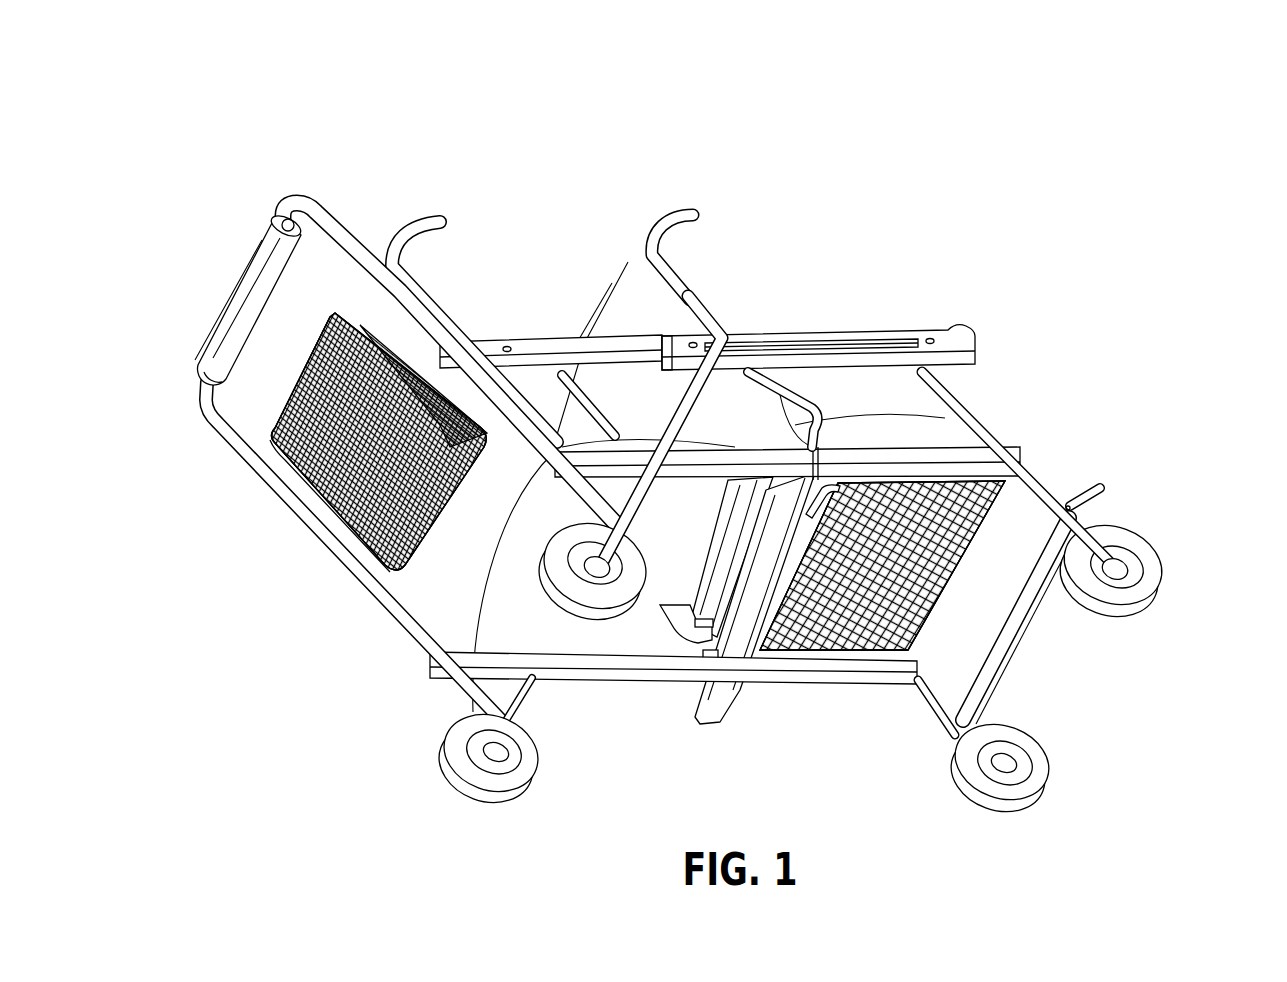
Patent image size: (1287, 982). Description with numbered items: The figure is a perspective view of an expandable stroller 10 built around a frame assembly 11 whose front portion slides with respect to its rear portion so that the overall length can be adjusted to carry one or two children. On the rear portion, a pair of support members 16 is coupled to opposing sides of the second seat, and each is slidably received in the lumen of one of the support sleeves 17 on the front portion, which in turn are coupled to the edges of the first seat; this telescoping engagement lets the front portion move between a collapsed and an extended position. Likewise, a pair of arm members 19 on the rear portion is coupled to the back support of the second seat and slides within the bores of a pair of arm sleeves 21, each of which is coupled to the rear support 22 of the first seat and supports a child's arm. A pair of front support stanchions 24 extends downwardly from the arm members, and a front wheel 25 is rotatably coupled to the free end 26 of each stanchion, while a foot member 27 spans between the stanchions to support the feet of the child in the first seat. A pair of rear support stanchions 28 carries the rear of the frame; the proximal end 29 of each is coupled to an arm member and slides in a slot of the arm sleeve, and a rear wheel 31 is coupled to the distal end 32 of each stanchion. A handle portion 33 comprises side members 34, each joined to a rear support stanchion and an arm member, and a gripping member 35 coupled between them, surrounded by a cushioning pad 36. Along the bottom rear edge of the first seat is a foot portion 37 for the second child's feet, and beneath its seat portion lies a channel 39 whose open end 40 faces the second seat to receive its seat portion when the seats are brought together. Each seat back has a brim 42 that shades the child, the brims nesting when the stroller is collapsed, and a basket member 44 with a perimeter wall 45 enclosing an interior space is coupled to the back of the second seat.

The expandable stroller 10 is at (698, 504).
The frame assembly 11 is at (698, 506).
The support members 16 is at (437, 613).
The support sleeves 17 is at (967, 453).
The arm members 19 is at (530, 346).
The arm sleeves 21 is at (830, 360).
The rear support 22 is at (665, 283).
The front support stanchions 24 is at (980, 420).
The front wheels 25 is at (1147, 590).
The free end 26 is at (1133, 577).
The foot member 27 is at (1097, 483).
The rear support stanchions 28 is at (660, 470).
The proximal end 29 is at (713, 340).
The rear wheels 31 is at (507, 783).
The distal end 32 is at (605, 590).
The handle portion 33 is at (298, 205).
The side members 34 is at (427, 320).
The gripping member 35 is at (261, 262).
The pad 36 is at (228, 310).
The foot portion 37 is at (748, 648).
The channel 39 is at (810, 650).
The open end 40 is at (687, 643).
The brim 42 is at (418, 223).
The basket member 44 is at (307, 472).
The perimeter wall 45 is at (288, 397).